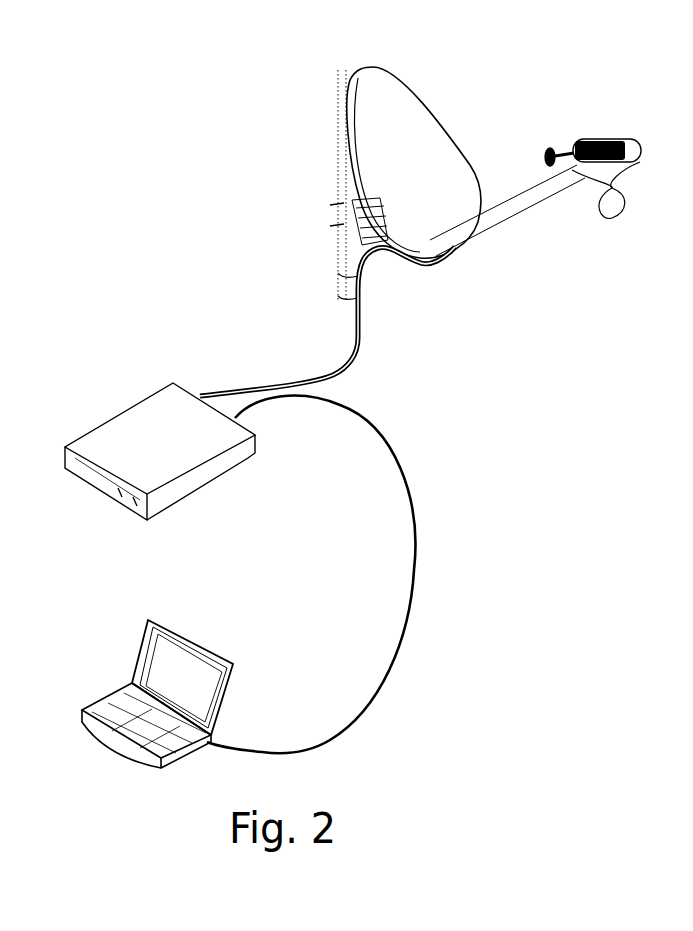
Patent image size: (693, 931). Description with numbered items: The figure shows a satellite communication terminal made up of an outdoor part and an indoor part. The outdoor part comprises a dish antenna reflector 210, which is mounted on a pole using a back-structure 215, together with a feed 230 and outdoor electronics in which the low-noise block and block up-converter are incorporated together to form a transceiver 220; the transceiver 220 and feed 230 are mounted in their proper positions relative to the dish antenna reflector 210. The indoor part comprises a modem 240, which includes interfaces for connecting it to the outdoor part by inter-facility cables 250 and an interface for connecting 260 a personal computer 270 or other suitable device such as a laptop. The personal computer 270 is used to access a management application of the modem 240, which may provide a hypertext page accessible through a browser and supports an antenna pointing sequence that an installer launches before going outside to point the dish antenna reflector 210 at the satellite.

The dish antenna reflector 210 is at (352, 80).
The back-structure 215 is at (352, 206).
The transceiver 220 is at (627, 141).
The feed 230 is at (538, 147).
The modem 240 is at (160, 451).
The inter-facility cables 250 is at (327, 321).
The connection to personal computer 260 is at (328, 575).
The personal computer 270 is at (157, 694).